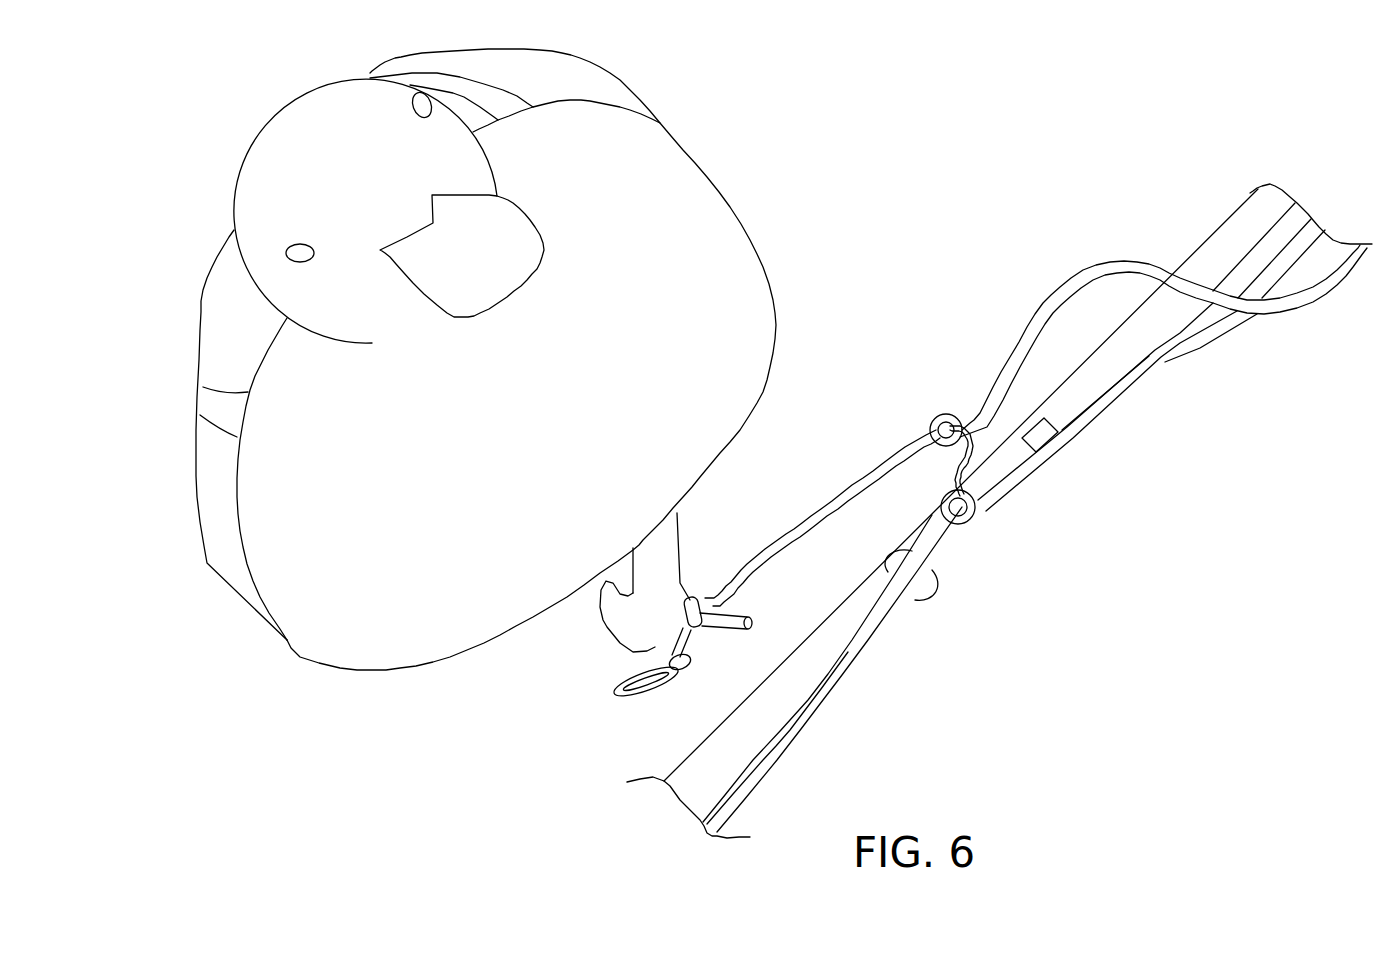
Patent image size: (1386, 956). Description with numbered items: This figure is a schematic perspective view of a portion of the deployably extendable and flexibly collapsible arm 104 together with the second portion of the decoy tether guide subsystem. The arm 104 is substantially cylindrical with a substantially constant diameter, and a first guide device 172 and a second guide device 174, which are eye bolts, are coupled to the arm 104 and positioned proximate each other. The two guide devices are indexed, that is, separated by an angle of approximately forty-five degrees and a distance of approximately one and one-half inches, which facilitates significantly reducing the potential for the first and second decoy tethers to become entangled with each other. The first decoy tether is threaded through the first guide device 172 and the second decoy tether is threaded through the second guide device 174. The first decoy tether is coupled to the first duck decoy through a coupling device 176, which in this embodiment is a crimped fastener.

The deployably extendable and flexibly collapsible arm 104 is at (1232, 245).
The first guide device 172 is at (930, 423).
The second guide device 174 is at (973, 530).
The coupling device 176 is at (693, 578).